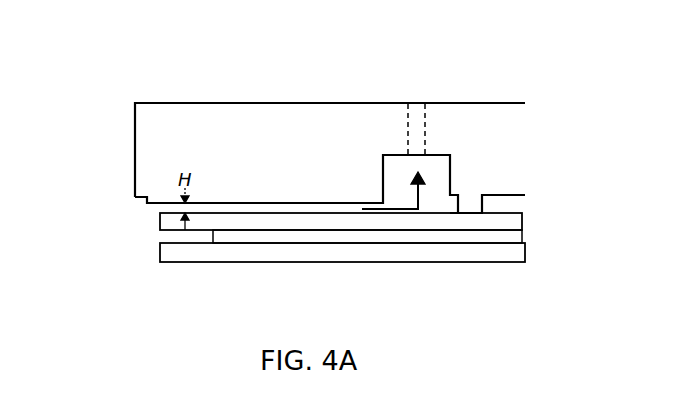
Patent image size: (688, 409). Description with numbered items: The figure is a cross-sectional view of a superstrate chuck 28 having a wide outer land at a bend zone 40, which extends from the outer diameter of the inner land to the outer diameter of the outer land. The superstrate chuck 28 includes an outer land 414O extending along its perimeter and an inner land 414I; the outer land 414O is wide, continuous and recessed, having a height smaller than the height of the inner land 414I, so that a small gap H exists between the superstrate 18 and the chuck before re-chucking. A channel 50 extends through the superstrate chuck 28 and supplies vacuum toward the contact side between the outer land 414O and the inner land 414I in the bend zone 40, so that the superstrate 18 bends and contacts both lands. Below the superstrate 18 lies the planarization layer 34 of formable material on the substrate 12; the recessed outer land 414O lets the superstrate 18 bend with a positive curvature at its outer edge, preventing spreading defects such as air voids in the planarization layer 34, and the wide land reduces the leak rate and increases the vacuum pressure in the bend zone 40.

The substrate 12 is at (160, 255).
The superstrate 18 is at (510, 222).
The superstrate chuck 28 is at (177, 148).
The planarization layer 34 is at (510, 234).
The bend zone 40 is at (458, 100).
The channel 50 is at (425, 140).
The outer land 414O is at (147, 203).
The inner land 414I is at (473, 206).